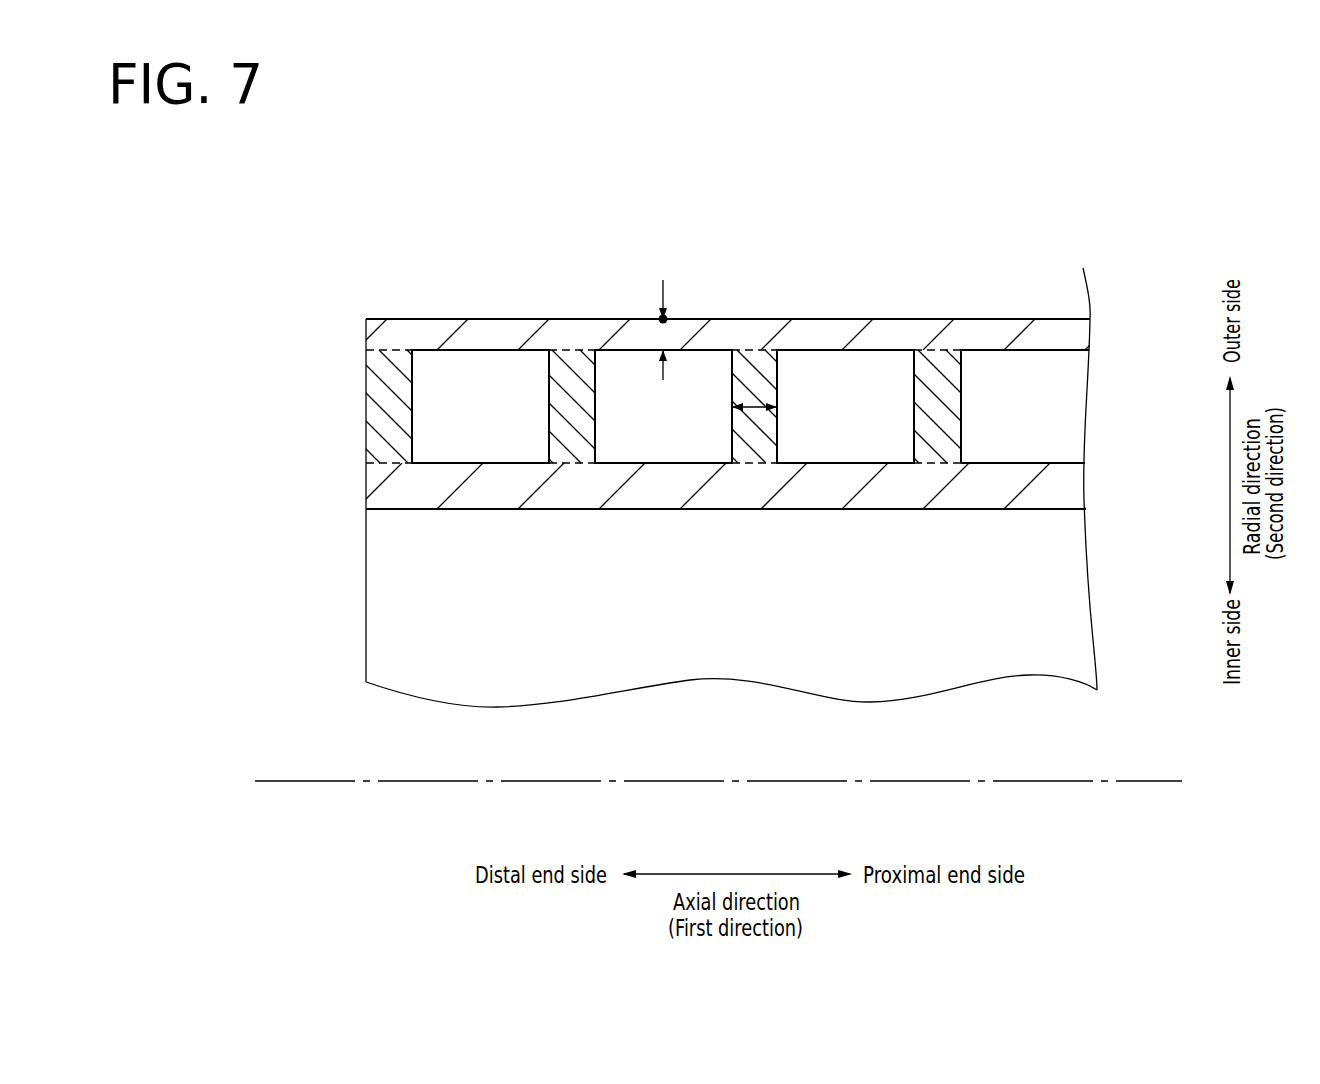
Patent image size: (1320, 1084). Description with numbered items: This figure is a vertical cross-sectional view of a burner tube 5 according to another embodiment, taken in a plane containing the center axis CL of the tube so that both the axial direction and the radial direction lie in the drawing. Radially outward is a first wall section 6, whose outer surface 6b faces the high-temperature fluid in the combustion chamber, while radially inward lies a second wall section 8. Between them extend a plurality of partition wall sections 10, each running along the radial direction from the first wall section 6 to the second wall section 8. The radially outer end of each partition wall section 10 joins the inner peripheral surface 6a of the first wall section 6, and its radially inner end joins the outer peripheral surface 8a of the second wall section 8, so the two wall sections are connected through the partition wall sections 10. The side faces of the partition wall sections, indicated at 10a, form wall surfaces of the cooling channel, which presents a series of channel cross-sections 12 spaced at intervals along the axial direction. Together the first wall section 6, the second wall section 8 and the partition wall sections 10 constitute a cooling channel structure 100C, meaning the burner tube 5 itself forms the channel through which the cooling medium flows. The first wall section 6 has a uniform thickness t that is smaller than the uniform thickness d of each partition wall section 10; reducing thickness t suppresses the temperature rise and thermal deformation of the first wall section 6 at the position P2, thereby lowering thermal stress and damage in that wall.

The burner tube 5 is at (958, 133).
The cooling channel structure 100C is at (1047, 175).
The first wall section 6 is at (433, 332).
The surface of the first wall section on the side of the second wall section 6a is at (698, 350).
The surface of the first wall section on the side opposite to the second wall sectio 6b is at (507, 319).
The second wall section 8 is at (658, 497).
The surface of the second wall section on the side of the first wall section 8a is at (673, 467).
The partition wall section 10 is at (400, 427).
The partition wall section side surface 10a is at (753, 425).
The channel cross-section 12 is at (480, 427).
The position P2 is at (663, 319).
The thickness of the first wall section t is at (665, 336).
The thickness of the partition wall section d is at (753, 402).
The center axis CL is at (737, 781).